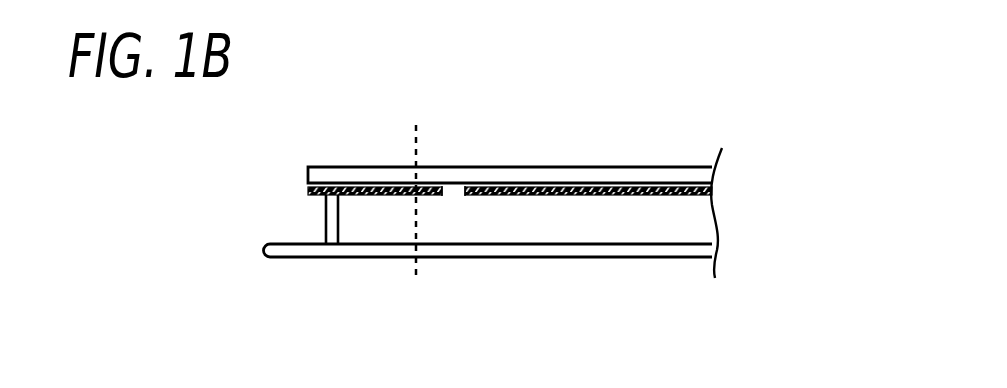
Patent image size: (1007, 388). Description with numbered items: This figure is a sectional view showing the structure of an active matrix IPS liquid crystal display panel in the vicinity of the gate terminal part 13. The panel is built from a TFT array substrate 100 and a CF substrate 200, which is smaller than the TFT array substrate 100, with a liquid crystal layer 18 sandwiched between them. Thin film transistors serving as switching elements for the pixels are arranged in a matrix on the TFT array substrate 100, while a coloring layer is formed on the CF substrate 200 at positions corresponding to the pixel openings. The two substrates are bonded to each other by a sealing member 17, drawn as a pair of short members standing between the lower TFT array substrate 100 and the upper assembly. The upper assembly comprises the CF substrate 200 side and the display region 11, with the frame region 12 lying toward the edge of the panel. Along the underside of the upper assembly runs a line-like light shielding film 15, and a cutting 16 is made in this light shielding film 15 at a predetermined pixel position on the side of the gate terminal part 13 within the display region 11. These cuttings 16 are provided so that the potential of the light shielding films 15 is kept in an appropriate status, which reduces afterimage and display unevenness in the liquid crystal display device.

The TFT array substrate 100 is at (477, 204).
The CF substrate 200 is at (511, 179).
The display region 11 is at (506, 138).
The frame region 12 is at (356, 162).
The gate terminal part 13 is at (277, 251).
The light shielding film 15 is at (558, 187).
The cutting 16 is at (455, 187).
The sealing member 17 is at (324, 213).
The liquid crystal layer 18 is at (527, 230).